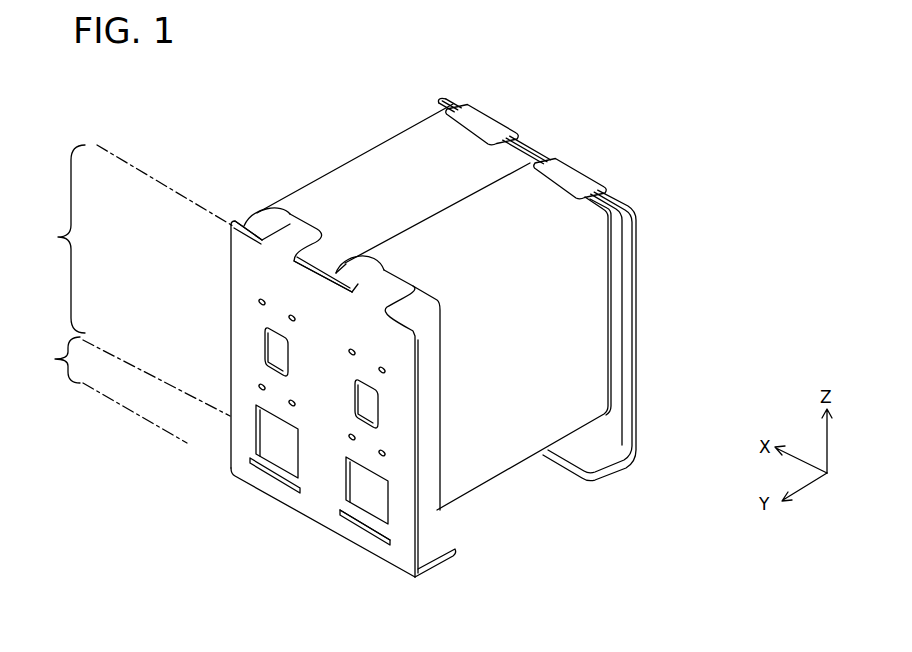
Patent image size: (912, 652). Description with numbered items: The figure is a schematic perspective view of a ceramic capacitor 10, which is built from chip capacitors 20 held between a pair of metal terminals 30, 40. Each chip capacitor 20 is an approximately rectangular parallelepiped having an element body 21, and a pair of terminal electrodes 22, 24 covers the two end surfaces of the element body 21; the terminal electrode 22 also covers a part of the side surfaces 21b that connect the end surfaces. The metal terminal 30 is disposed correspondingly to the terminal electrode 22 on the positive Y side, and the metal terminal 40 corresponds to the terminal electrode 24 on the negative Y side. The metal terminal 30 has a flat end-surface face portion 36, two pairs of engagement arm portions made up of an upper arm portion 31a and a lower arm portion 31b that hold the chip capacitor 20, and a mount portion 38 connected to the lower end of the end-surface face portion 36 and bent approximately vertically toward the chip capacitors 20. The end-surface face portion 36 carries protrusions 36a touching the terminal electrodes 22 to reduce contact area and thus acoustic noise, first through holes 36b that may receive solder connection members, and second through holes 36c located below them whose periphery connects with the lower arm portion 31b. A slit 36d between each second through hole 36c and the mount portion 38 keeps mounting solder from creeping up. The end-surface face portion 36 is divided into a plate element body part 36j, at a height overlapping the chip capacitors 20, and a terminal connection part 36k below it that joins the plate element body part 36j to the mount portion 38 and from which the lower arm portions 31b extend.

The ceramic capacitor 10 is at (655, 98).
The chip capacitor 20 is at (385, 165).
The element body 21 is at (588, 302).
The side surfaces 21b is at (420, 197).
The terminal electrode 22 is at (262, 216).
The terminal electrode 24 is at (446, 100).
The metal terminal 30 is at (221, 454).
The upper arm portion 31a is at (289, 231).
The lower arm portion 31b is at (276, 454).
The end-surface face portion 36 is at (240, 315).
The protrusion 36a is at (258, 300).
The first through hole 36b is at (266, 348).
The second through hole 36c is at (263, 423).
The slit 36d is at (367, 538).
The plate element body part 36j is at (48, 239).
The terminal connection part 36k is at (46, 360).
The mount portion 38 is at (433, 550).
The metal terminal 40 is at (646, 202).